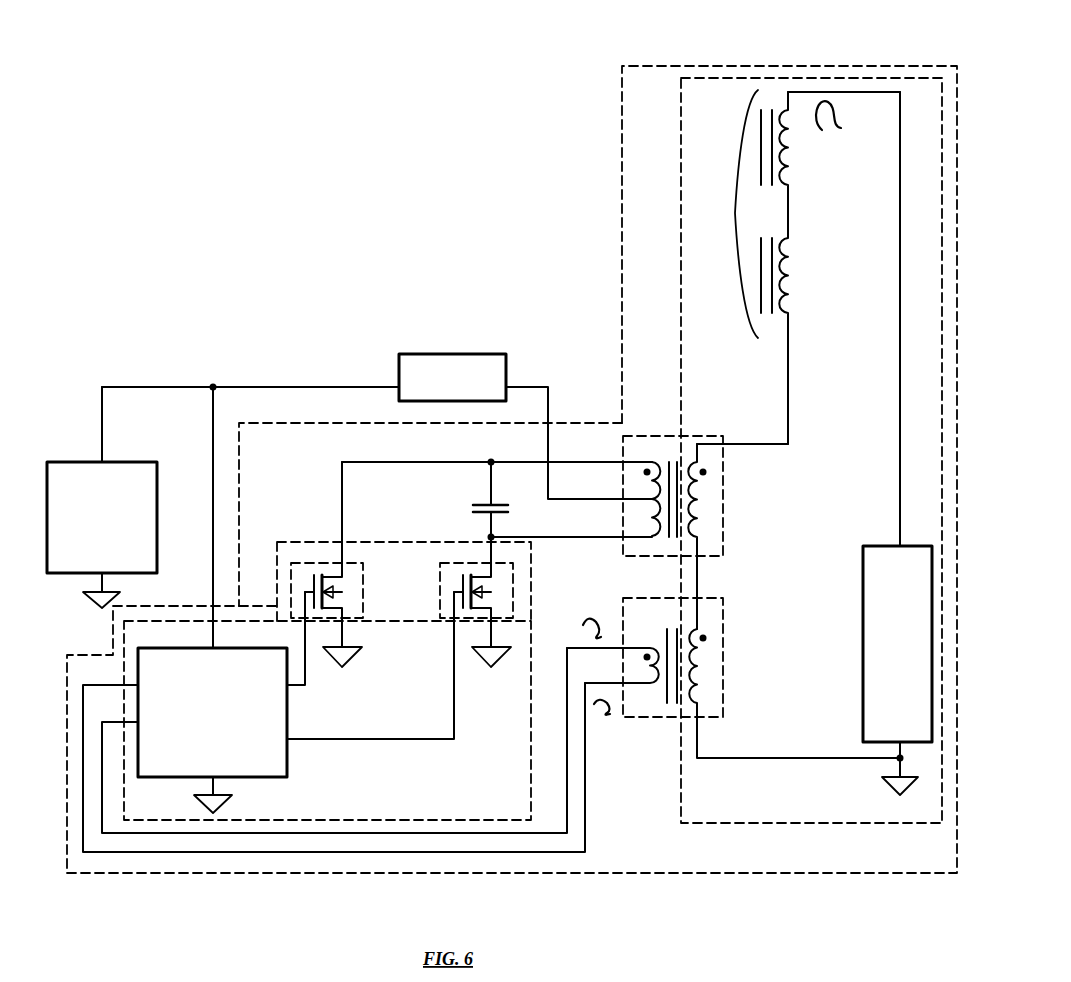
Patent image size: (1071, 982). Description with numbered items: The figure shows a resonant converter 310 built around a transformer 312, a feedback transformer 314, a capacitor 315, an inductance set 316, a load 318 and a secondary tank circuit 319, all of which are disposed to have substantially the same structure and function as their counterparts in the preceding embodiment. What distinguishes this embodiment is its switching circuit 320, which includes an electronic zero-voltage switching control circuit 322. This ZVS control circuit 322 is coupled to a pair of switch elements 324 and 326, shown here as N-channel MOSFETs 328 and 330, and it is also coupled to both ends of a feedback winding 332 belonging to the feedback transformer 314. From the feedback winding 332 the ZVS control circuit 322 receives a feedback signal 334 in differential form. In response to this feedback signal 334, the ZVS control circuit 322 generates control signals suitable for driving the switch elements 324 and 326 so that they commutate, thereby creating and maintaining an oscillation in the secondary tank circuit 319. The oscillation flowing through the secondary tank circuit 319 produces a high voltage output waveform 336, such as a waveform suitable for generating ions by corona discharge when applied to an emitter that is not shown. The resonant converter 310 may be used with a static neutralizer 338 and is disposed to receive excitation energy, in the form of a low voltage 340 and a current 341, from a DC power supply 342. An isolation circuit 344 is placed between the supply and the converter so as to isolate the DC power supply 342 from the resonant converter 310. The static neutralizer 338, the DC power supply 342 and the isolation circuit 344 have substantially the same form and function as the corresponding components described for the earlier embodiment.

The resonant converter 310 is at (322, 423).
The transformer 312 is at (656, 433).
The feedback transformer 314 is at (723, 712).
The capacitor 315 is at (478, 504).
The inductance set 316 is at (790, 267).
The load 318 is at (897, 443).
The secondary tank circuit 319 is at (744, 78).
The switching circuit 320 is at (503, 819).
The zero-voltage switching (ZVS) control circuit 322 is at (334, 722).
The switch element 324 is at (363, 613).
The switch element 326 is at (440, 593).
The N-channel MOSFET 328 is at (305, 570).
The N-channel MOSFET 330 is at (462, 559).
The feedback winding 332 is at (644, 703).
The feedback signal 334 is at (588, 646).
The high voltage output waveform 336 is at (825, 132).
The static neutralizer 338 is at (557, 45).
The low voltage 340 is at (108, 370).
The current 341 is at (200, 378).
The DC power supply 342 is at (102, 535).
The isolation circuit 344 is at (525, 426).